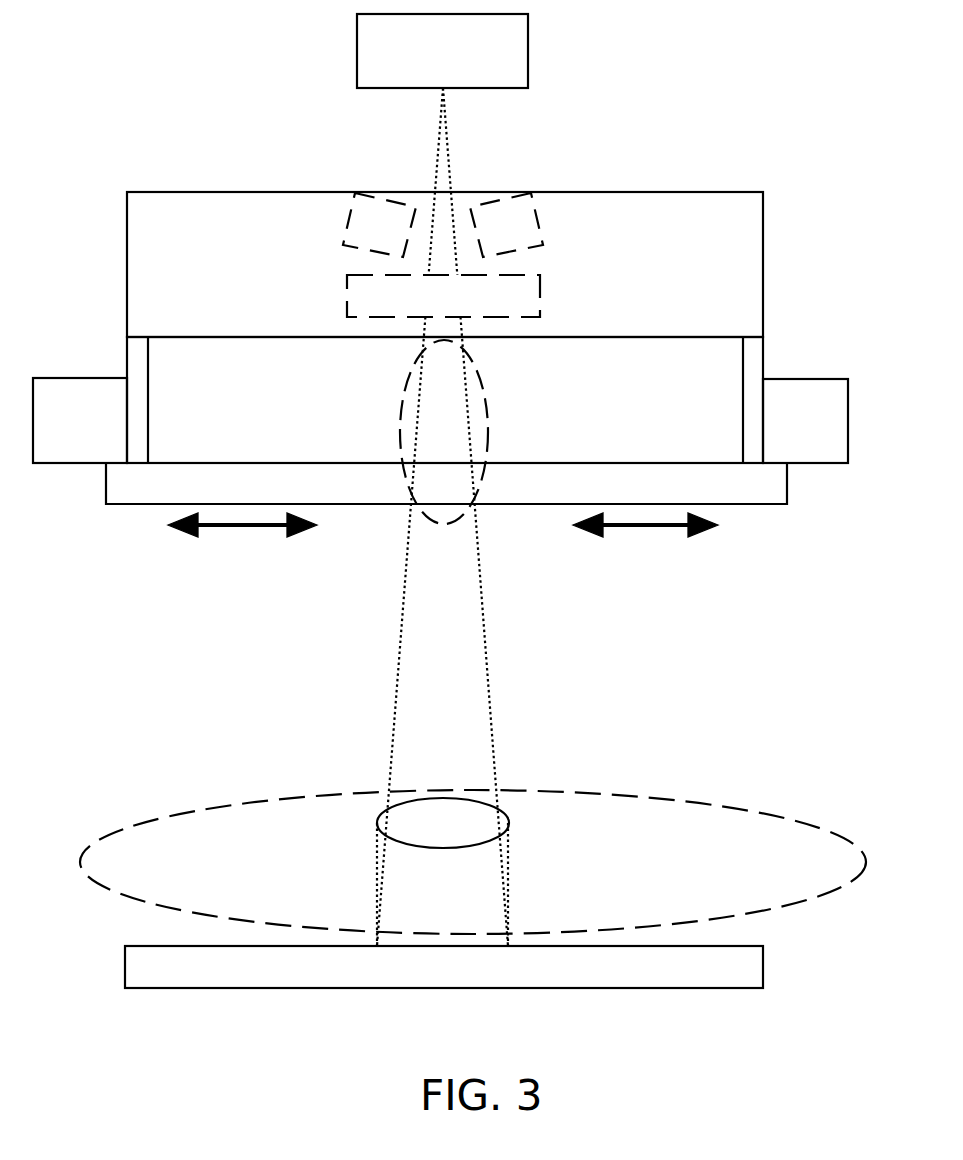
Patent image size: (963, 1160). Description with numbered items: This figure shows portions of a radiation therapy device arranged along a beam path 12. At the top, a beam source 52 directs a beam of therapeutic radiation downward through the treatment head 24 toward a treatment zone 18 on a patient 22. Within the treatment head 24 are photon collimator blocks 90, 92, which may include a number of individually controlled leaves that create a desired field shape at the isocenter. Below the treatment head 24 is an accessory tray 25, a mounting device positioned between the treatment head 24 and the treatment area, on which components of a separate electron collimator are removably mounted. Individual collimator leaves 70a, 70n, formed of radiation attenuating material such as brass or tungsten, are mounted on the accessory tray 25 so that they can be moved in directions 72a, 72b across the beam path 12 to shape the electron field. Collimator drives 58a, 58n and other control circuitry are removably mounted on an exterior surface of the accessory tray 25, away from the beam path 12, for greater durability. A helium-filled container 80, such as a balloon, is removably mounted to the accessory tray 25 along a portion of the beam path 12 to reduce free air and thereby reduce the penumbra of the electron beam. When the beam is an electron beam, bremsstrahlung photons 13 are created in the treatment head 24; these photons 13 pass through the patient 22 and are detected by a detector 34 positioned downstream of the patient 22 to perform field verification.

The beam source 52 is at (528, 55).
The beam path 12 is at (452, 180).
The treatment head 24 is at (763, 255).
The accessory tray 25 is at (763, 348).
The collimator block 90 is at (395, 245).
The collimator block 92 is at (533, 314).
The container 80 is at (478, 385).
The collimator drive 58a is at (104, 437).
The collimator drive 58n is at (832, 438).
The collimator leaf 70a is at (286, 498).
The collimator leaf 70n is at (658, 498).
The direction 72a is at (242, 538).
The direction 72b is at (645, 538).
The patient 22 is at (678, 800).
The treatment zone 18 is at (472, 800).
The bremsstrahlung photons 13 is at (508, 902).
The detector 34 is at (763, 967).